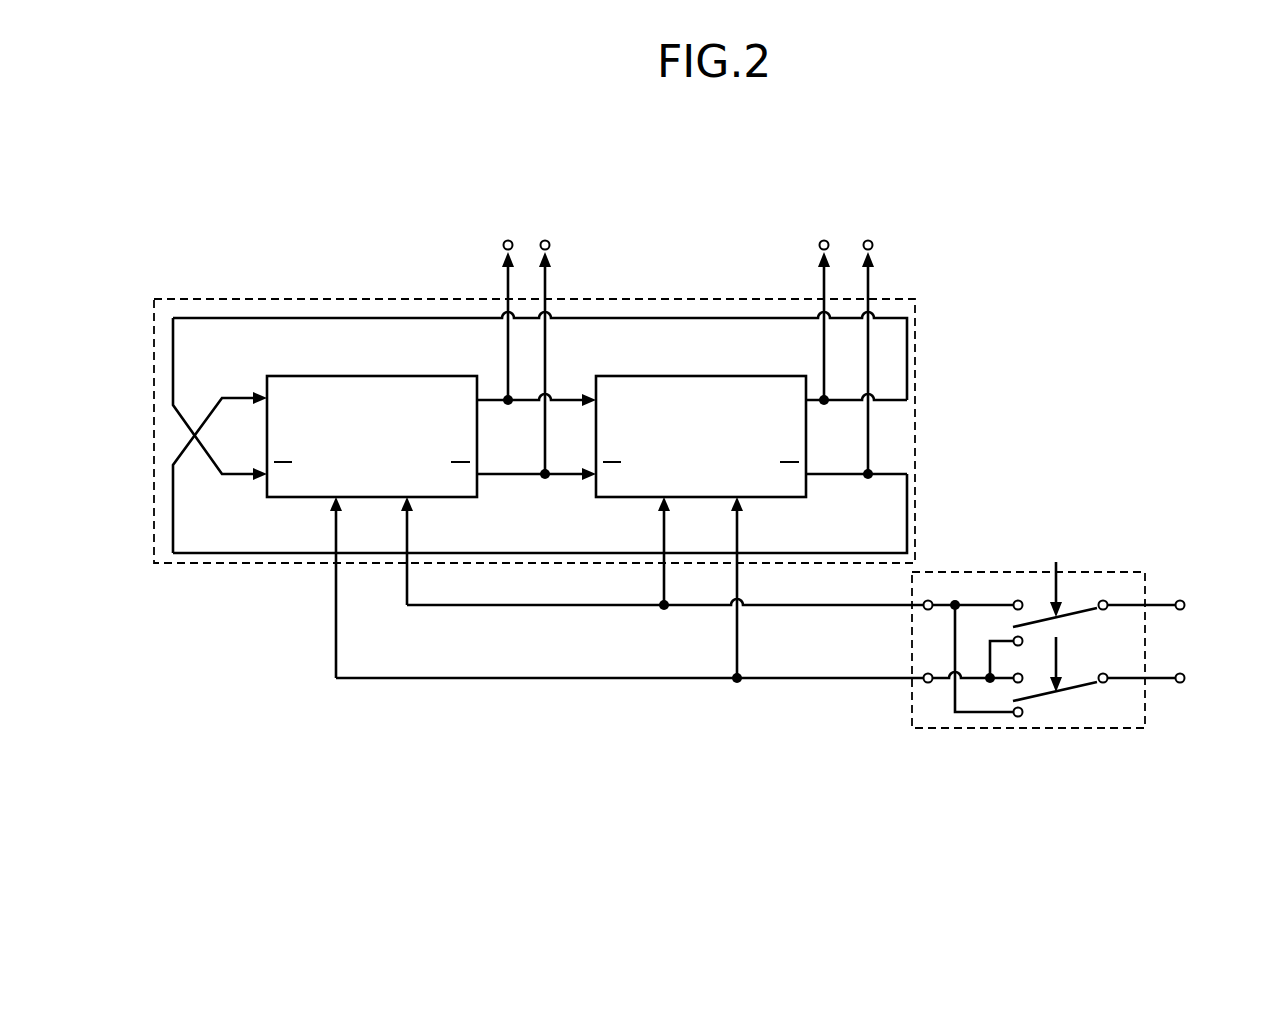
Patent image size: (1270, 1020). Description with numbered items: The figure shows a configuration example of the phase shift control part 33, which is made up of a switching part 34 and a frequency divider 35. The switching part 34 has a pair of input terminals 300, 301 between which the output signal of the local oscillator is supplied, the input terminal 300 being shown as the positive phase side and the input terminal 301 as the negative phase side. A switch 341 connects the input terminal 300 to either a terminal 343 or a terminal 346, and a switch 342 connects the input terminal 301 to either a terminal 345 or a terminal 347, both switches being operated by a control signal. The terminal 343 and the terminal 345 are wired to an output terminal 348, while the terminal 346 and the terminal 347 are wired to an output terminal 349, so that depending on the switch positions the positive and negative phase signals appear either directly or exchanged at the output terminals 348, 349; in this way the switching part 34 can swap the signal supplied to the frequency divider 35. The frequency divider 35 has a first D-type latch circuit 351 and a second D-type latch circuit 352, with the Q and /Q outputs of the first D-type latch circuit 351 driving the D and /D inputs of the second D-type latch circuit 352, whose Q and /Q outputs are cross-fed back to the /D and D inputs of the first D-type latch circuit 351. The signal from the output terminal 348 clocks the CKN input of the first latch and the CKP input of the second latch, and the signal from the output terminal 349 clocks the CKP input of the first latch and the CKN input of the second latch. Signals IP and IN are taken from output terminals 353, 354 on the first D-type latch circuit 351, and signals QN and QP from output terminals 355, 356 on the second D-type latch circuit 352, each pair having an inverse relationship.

The phase shift control part 33 is at (1089, 165).
The frequency divider 35 is at (916, 322).
The first D-type latch circuit 351 is at (297, 375).
The second D-type latch circuit 352 is at (697, 375).
The output terminal 353 is at (503, 245).
The output terminal 354 is at (550, 245).
The output terminal 355 is at (819, 245).
The output terminal 356 is at (873, 245).
The switching part 34 is at (1129, 572).
The switch 341 is at (1080, 598).
The switch 342 is at (1075, 690).
The terminal 343 is at (1018, 598).
The terminal 345 is at (1018, 720).
The terminal 346 is at (1013, 637).
The terminal 347 is at (1013, 685).
The output terminal 348 is at (928, 598).
The output terminal 349 is at (928, 686).
The input terminal 300 is at (1180, 598).
The input terminal 301 is at (1180, 686).